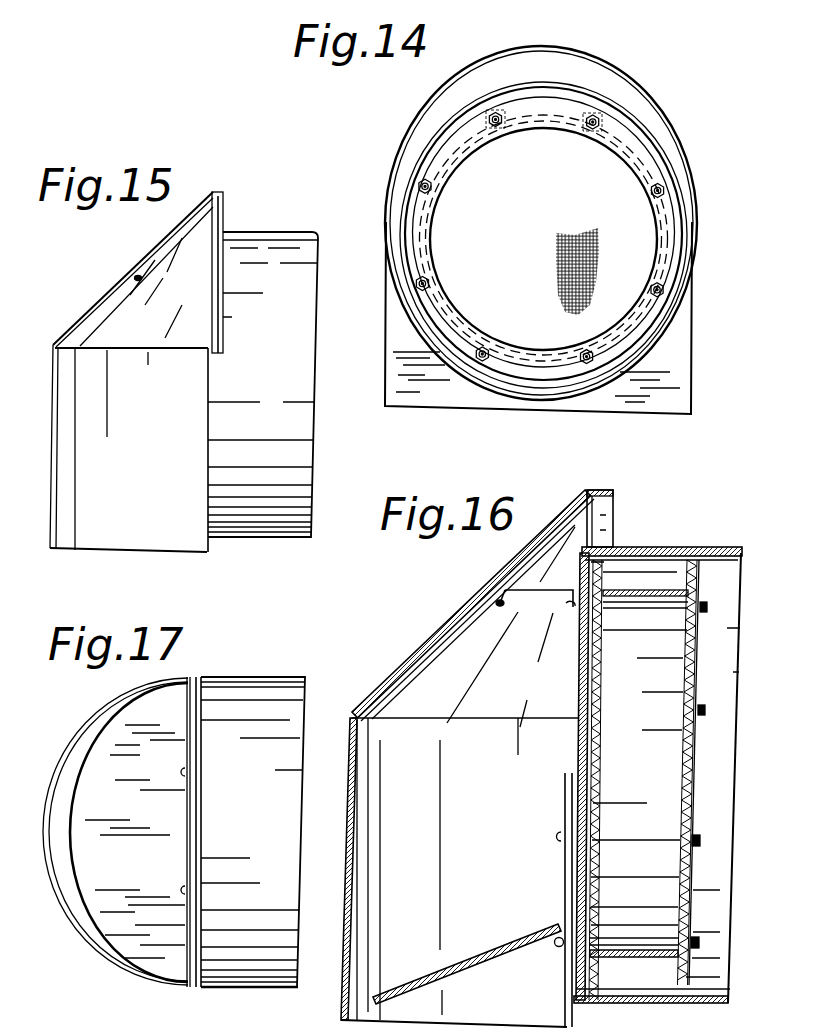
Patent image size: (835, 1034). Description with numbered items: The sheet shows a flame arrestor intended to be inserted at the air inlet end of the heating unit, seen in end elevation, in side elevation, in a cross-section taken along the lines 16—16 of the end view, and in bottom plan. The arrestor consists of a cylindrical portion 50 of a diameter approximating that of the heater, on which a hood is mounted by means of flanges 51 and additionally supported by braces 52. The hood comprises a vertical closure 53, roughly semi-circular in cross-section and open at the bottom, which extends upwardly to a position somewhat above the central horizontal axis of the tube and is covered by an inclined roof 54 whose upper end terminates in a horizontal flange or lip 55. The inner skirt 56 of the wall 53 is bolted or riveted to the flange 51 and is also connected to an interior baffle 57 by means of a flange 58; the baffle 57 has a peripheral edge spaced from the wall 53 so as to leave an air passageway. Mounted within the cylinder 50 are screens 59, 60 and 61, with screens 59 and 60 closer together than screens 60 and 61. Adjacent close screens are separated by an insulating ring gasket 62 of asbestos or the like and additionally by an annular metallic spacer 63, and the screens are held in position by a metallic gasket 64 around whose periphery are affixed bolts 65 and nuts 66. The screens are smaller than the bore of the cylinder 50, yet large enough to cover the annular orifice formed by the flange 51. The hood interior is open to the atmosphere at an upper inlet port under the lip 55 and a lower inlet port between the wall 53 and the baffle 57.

In FIG. 14, the section line 16 is at (545, 58).
In FIG. 14, the cylindrical portion 50 is at (690, 265).
In FIG. 15, the cylindrical portion 50 is at (270, 233).
In FIG. 17, the cylindrical portion 50 is at (265, 686).
In FIG. 16, the cylindrical portion 50 is at (668, 549).
In FIG. 16, the flange 51 is at (584, 574).
In FIG. 16, the brace 52 is at (537, 597).
In FIG. 15, the vertical closure 53 is at (62, 455).
In FIG. 17, the vertical closure 53 is at (81, 742).
In FIG. 16, the vertical closure 53 is at (355, 746).
In FIG. 15, the inclined roof 54 is at (122, 280).
In FIG. 16, the inclined roof 54 is at (458, 616).
In FIG. 14, the horizontal flange or lip 55 is at (617, 69).
In FIG. 16, the horizontal flange or lip 55 is at (611, 492).
In FIG. 14, the inner skirt 56 is at (686, 362).
In FIG. 15, the inner skirt 56 is at (208, 546).
In FIG. 17, the inner skirt 56 is at (197, 860).
In FIG. 16, the inner skirt 56 is at (573, 1015).
In FIG. 17, the interior baffle 57 is at (185, 700).
In FIG. 16, the interior baffle 57 is at (478, 962).
In FIG. 17, the flange 58 is at (198, 680).
In FIG. 16, the flange 58 is at (558, 950).
In FIG. 16, the screen 59 is at (579, 665).
In FIG. 16, the screen 60 is at (600, 681).
In FIG. 16, the screen 61 is at (690, 684).
In FIG. 16, the insulating ring gasket 62 is at (604, 572).
In FIG. 16, the annular metallic ring or spacer 63 is at (638, 598).
In FIG. 14, the metallic gasket 64 is at (683, 222).
In FIG. 16, the metallic gasket 64 is at (700, 587).
In FIG. 14, the bolt 65 is at (662, 289).
In FIG. 16, the bolt 65 is at (572, 609).
In FIG. 16, the nut 66 is at (708, 611).